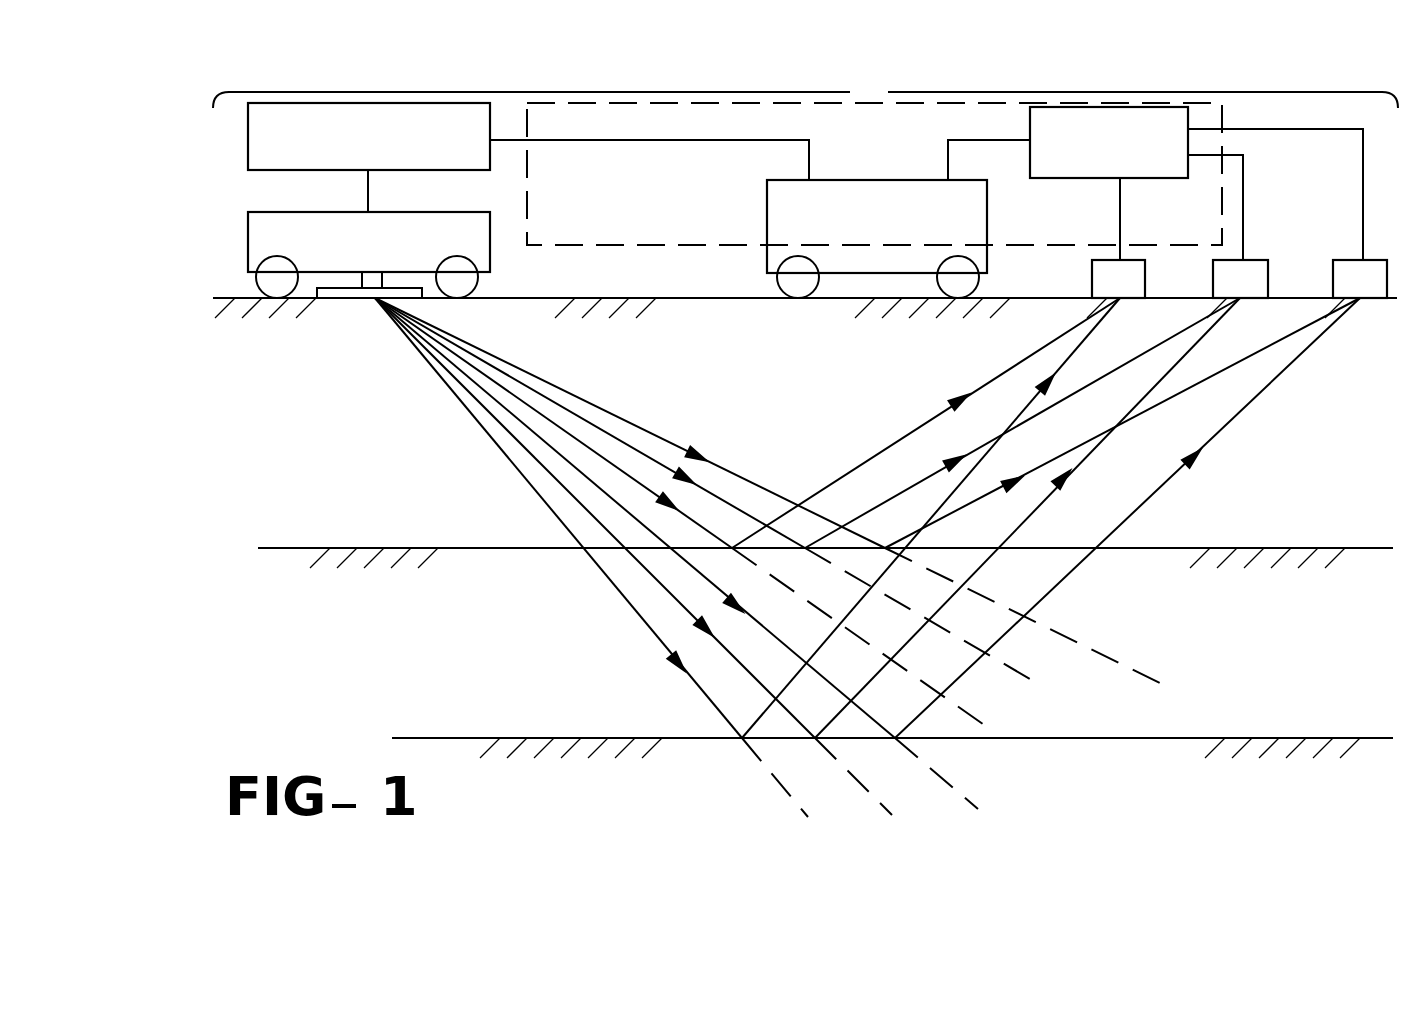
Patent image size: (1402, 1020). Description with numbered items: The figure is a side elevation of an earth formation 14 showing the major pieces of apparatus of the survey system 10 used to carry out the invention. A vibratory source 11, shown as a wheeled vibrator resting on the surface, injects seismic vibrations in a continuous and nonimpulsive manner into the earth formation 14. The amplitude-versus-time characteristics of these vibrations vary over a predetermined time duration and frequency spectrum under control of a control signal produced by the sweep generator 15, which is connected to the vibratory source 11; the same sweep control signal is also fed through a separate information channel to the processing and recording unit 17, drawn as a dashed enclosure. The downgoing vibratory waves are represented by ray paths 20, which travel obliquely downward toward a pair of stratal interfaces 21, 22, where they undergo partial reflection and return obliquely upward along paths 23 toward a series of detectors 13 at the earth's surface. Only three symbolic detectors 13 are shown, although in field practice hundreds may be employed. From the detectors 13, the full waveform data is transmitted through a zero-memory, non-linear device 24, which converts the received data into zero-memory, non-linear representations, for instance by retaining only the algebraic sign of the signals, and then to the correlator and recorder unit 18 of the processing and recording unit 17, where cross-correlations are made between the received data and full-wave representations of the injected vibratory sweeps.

The survey system 10 is at (805, 94).
The vibratory source 11 is at (248, 245).
The detectors 13 is at (1145, 294).
The earth formation 14 is at (298, 463).
The sweep generator 15 is at (248, 160).
The processing and recording unit 17 is at (645, 248).
The correlator and recorder unit 18 is at (767, 213).
The ray paths 20 is at (560, 432).
The stratal interface 21 is at (462, 548).
The stratal interface 22 is at (545, 738).
The paths 23 is at (1160, 410).
The zero-memory, non-linear device 24 is at (1093, 178).